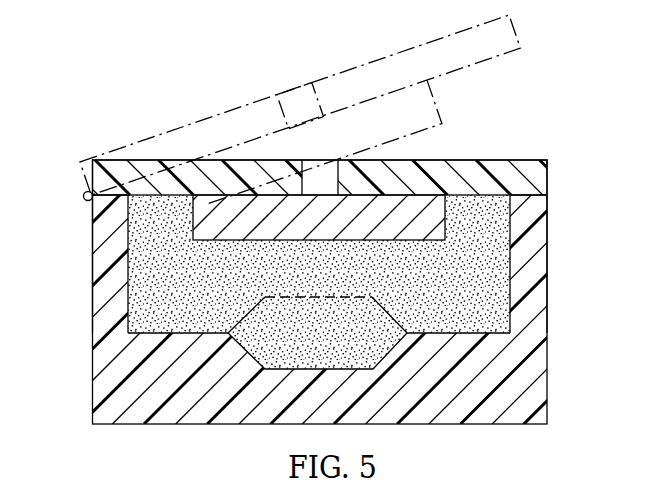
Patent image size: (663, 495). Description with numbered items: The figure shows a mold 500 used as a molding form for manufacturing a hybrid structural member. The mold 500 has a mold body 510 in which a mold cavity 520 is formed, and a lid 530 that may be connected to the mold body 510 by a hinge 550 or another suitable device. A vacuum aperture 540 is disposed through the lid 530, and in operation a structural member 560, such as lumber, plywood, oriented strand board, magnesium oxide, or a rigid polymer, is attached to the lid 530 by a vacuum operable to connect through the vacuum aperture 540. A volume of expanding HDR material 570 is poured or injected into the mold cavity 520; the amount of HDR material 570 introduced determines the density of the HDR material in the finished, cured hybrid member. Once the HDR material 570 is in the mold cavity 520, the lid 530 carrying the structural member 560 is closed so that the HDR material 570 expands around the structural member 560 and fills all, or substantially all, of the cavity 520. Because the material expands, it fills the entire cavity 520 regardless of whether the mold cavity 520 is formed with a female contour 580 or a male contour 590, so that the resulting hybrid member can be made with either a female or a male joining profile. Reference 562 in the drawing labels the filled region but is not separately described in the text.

The mold 500 is at (177, 73).
The mold body 510 is at (100, 358).
The mold cavity 520 is at (499, 268).
The lid 530 is at (500, 160).
The vacuum aperture 540 is at (303, 193).
The hinge 550 is at (83, 197).
The structural member 560 is at (288, 232).
The fill material 562 is at (208, 293).
The expanding HDR material 570 is at (137, 262).
The female contour 580 is at (388, 314).
The male contour 590 is at (248, 367).